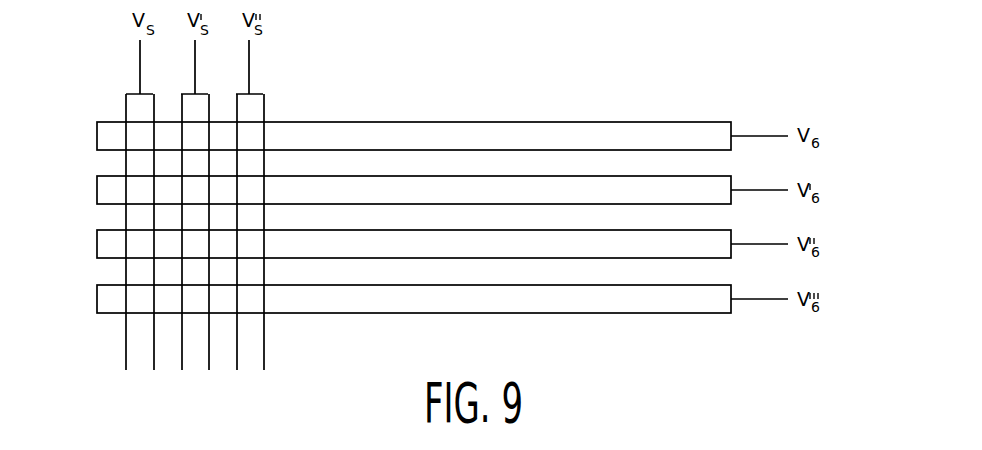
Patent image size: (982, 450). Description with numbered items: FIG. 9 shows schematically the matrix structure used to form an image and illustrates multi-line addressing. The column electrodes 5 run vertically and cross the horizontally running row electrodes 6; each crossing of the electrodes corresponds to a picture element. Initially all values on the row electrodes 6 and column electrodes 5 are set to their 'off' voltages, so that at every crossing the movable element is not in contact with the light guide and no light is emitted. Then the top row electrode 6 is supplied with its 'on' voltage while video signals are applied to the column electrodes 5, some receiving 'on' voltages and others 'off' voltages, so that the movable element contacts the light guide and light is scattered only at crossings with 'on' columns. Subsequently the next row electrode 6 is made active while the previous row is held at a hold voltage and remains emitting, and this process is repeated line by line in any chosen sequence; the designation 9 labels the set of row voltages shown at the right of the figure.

The column electrode 5 is at (257, 104).
The row electrode 6 is at (683, 300).
The row voltage designation 9 is at (855, 219).